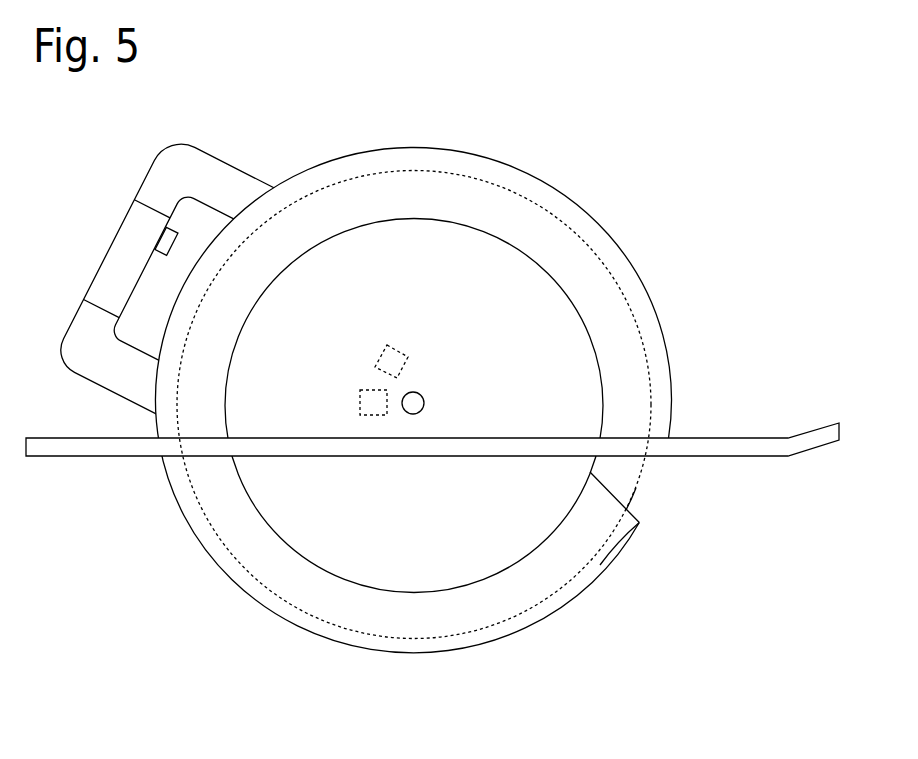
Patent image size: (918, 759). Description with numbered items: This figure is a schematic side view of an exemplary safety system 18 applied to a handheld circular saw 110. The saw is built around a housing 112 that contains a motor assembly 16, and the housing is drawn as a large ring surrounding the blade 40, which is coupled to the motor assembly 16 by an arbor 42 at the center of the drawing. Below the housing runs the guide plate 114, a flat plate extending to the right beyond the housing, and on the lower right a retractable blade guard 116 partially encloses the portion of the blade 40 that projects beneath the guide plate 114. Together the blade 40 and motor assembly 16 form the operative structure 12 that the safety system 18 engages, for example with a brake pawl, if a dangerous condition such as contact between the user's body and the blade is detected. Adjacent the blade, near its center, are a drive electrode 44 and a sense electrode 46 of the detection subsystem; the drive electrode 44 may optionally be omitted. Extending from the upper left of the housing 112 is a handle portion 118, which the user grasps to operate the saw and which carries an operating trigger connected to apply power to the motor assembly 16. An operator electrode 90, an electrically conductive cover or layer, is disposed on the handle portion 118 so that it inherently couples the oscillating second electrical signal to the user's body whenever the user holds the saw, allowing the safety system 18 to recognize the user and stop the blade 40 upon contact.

The circular saw 110 is at (763, 105).
The safety system 18 is at (652, 109).
The housing 112 is at (553, 206).
The motor assembly 16 is at (553, 328).
The handle portion 118 is at (88, 378).
The operator electrode 90 is at (132, 230).
The operative structure 12 is at (168, 240).
The blade 40 is at (637, 490).
The retractable blade guard 116 is at (600, 565).
The guide plate 114 is at (728, 437).
The arbor 42 is at (425, 402).
The drive electrode 44 is at (380, 360).
The sense electrode 46 is at (358, 403).